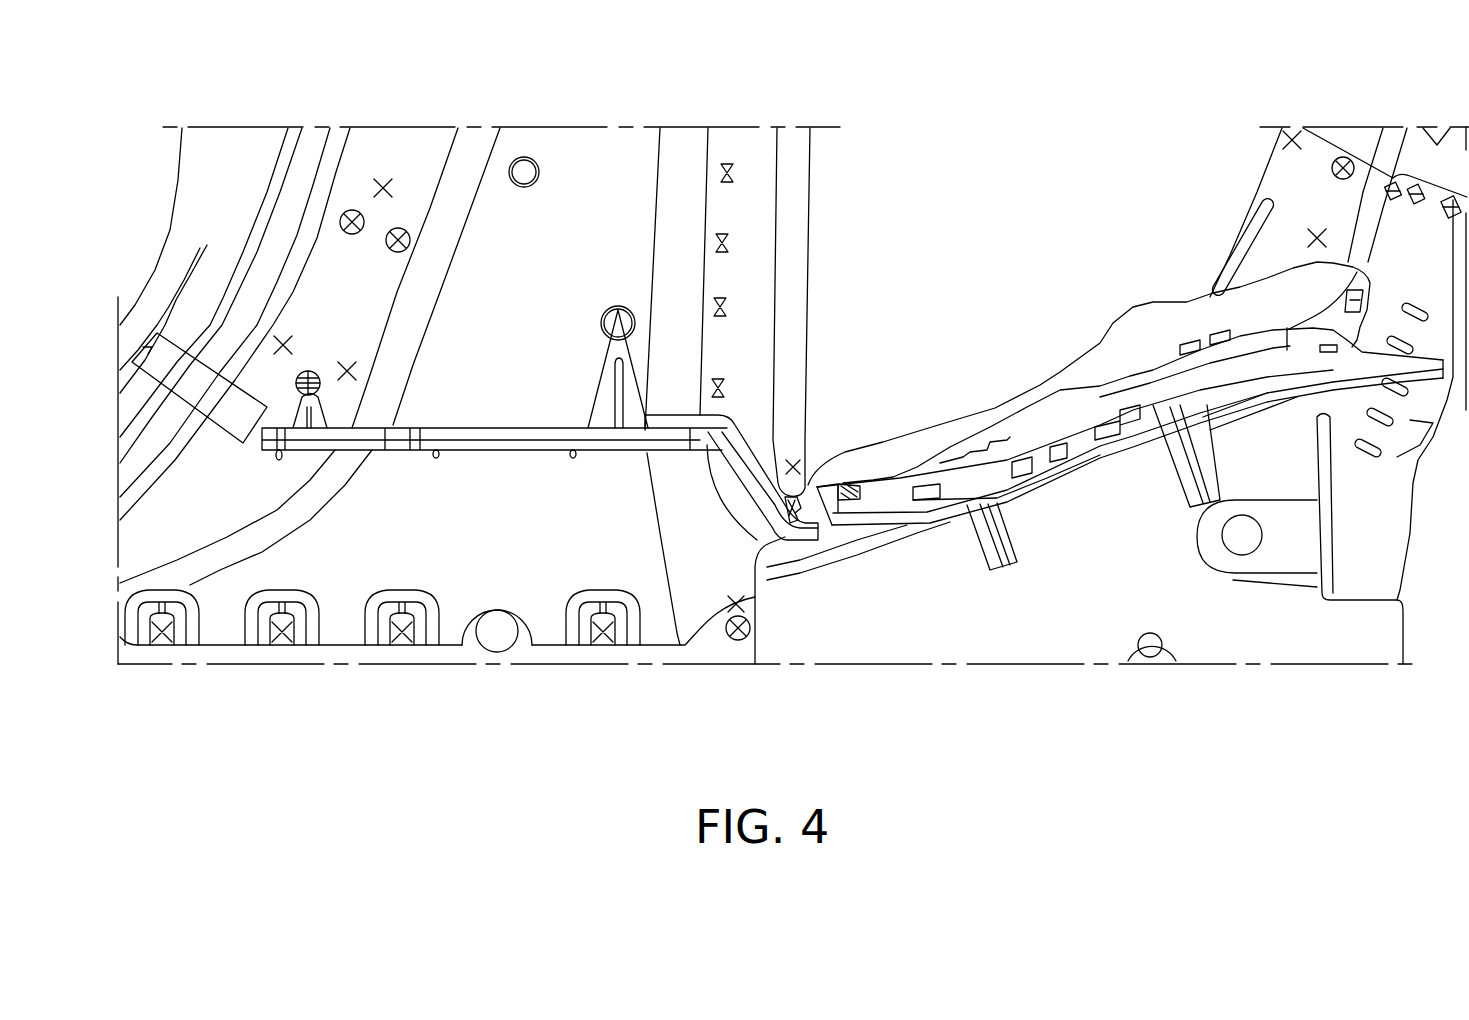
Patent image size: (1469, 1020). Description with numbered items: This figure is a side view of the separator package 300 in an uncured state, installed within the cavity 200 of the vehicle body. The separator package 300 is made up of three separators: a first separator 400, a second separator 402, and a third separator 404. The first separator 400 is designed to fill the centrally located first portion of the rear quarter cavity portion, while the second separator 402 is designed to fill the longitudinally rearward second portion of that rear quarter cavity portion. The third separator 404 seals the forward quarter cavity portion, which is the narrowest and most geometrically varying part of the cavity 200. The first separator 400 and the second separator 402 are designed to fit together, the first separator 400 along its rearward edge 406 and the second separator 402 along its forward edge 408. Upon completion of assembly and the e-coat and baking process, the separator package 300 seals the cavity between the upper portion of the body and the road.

The cavity 200 is at (809, 595).
The separator package 300 is at (557, 470).
The first separator 400 is at (498, 428).
The second separator 402 is at (1121, 376).
The third separator 404 is at (213, 370).
The rearward edge 406 is at (795, 487).
The forward edge 408 is at (843, 483).